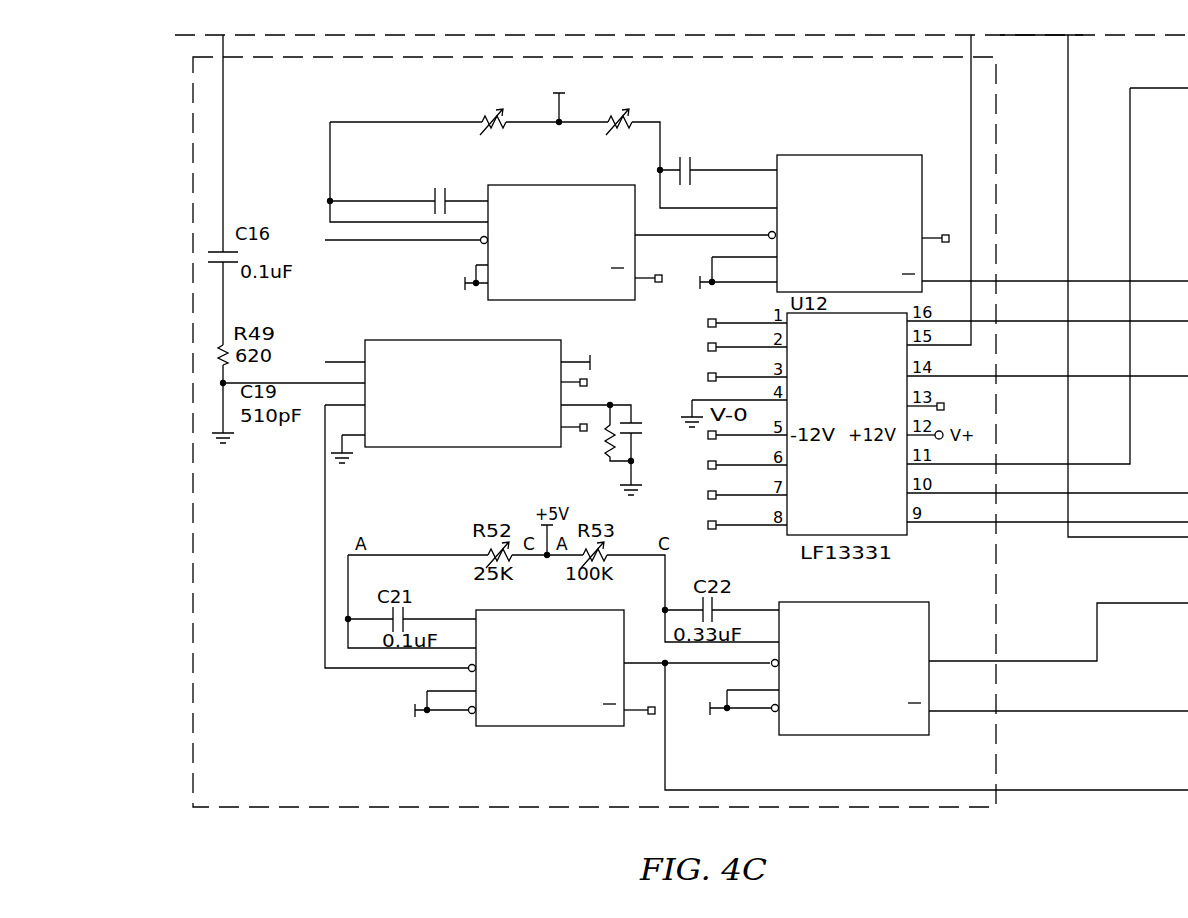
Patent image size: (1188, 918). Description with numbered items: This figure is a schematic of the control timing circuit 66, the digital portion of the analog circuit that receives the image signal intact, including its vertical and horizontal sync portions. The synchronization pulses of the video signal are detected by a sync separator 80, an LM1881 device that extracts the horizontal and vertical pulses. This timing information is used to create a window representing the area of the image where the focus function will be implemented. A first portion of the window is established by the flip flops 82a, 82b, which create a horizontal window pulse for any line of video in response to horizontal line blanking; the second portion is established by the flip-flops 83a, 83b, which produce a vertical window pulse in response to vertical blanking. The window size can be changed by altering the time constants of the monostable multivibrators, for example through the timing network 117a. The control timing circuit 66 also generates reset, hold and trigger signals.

The control timing circuit 66 is at (681, 421).
The sync separator 80 is at (476, 341).
The flip flop 82a is at (542, 186).
The flip flop 82b is at (823, 156).
The flip-flop 83a is at (572, 611).
The flip-flop 83b is at (822, 603).
The timing network (R37, C13) 117a is at (553, 147).